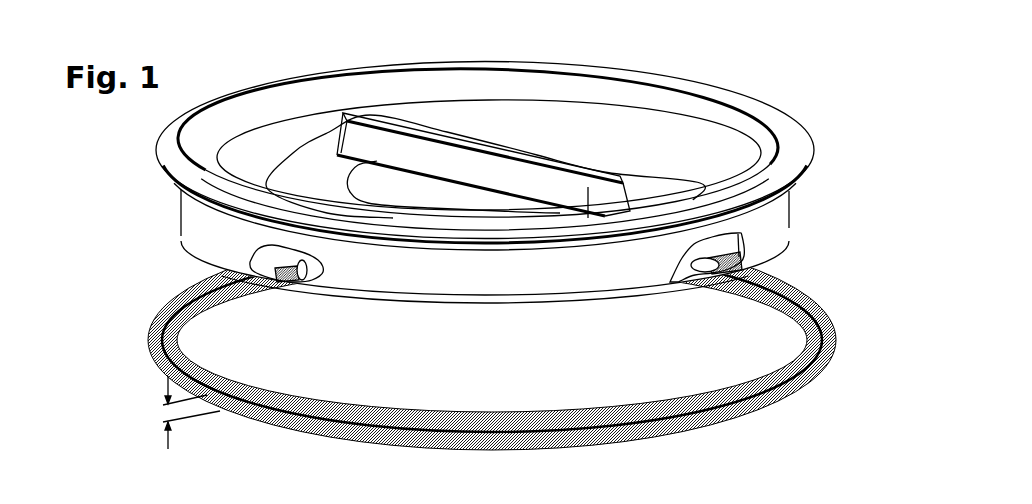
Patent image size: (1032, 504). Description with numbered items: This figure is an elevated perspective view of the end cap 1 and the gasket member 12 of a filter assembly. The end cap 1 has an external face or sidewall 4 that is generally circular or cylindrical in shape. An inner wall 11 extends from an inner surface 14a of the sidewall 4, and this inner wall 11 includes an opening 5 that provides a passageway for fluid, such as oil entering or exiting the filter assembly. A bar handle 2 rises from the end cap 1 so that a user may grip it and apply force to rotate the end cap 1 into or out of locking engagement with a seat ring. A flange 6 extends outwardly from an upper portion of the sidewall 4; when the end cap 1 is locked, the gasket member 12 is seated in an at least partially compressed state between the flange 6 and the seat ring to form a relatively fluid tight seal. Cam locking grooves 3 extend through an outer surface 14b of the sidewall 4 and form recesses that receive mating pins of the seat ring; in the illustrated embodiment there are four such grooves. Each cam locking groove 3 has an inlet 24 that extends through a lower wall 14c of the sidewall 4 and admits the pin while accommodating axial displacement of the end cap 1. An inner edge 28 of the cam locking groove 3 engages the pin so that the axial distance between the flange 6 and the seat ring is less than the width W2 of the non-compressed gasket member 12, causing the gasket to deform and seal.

The end cap 1 is at (457, 190).
The handle 2 is at (384, 125).
The cam locking groove 3 is at (476, 299).
The sidewall 4 is at (504, 272).
The opening 5 is at (387, 188).
The flange 6 is at (805, 173).
The inner wall 11 is at (574, 120).
The gasket member 12 is at (831, 334).
The inner surface 14a is at (481, 82).
The outer surface 14b is at (205, 225).
The lower wall 14c is at (596, 292).
The inlet 24 is at (268, 275).
The inner edge 28 is at (298, 280).
The width of non-compressed gasket member W2 is at (167, 380).